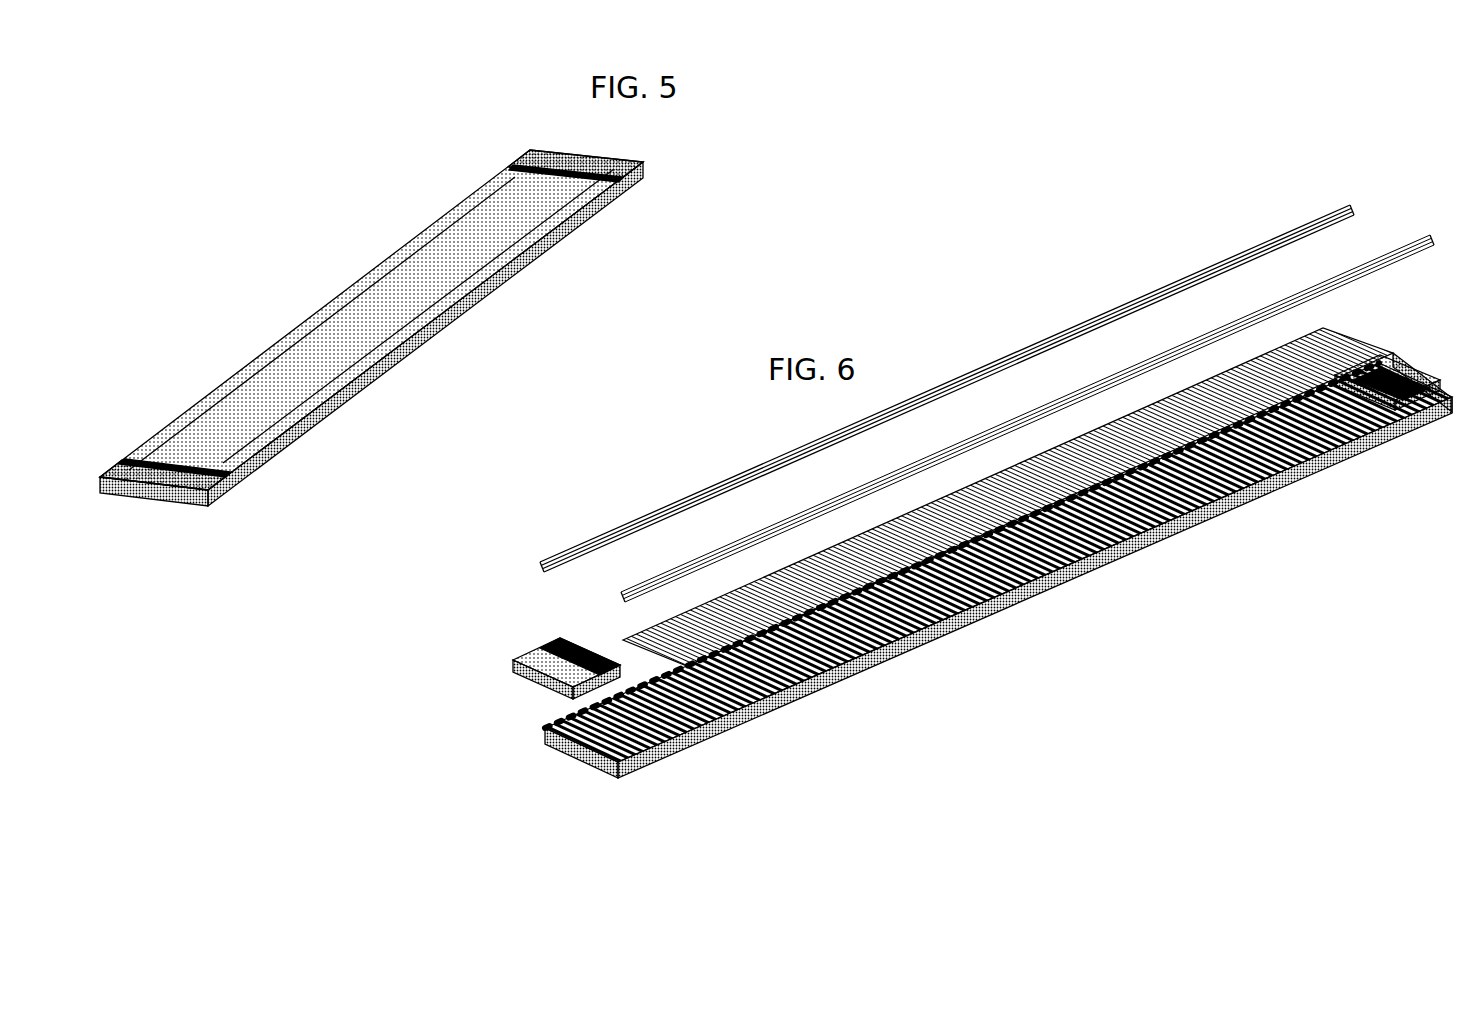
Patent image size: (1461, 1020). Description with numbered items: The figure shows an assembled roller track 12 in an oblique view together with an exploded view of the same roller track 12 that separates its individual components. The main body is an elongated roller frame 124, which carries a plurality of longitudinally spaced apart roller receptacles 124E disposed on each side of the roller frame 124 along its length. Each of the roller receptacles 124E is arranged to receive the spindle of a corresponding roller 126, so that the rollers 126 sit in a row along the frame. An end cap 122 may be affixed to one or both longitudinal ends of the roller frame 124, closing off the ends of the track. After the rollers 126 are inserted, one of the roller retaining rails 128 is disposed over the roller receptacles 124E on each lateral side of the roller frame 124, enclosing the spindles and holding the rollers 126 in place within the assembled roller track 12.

In FIG. 5, the roller track 12 is at (412, 112).
In FIG. 5, the end cap 122 is at (643, 160).
In FIG. 6, the end cap 122 is at (1395, 368).
In FIG. 6, the roller frame 124 is at (546, 742).
In FIG. 6, the roller receptacles 124E is at (595, 722).
In FIG. 6, the roller 126 is at (623, 639).
In FIG. 6, the roller retaining rail 128 is at (1001, 425).